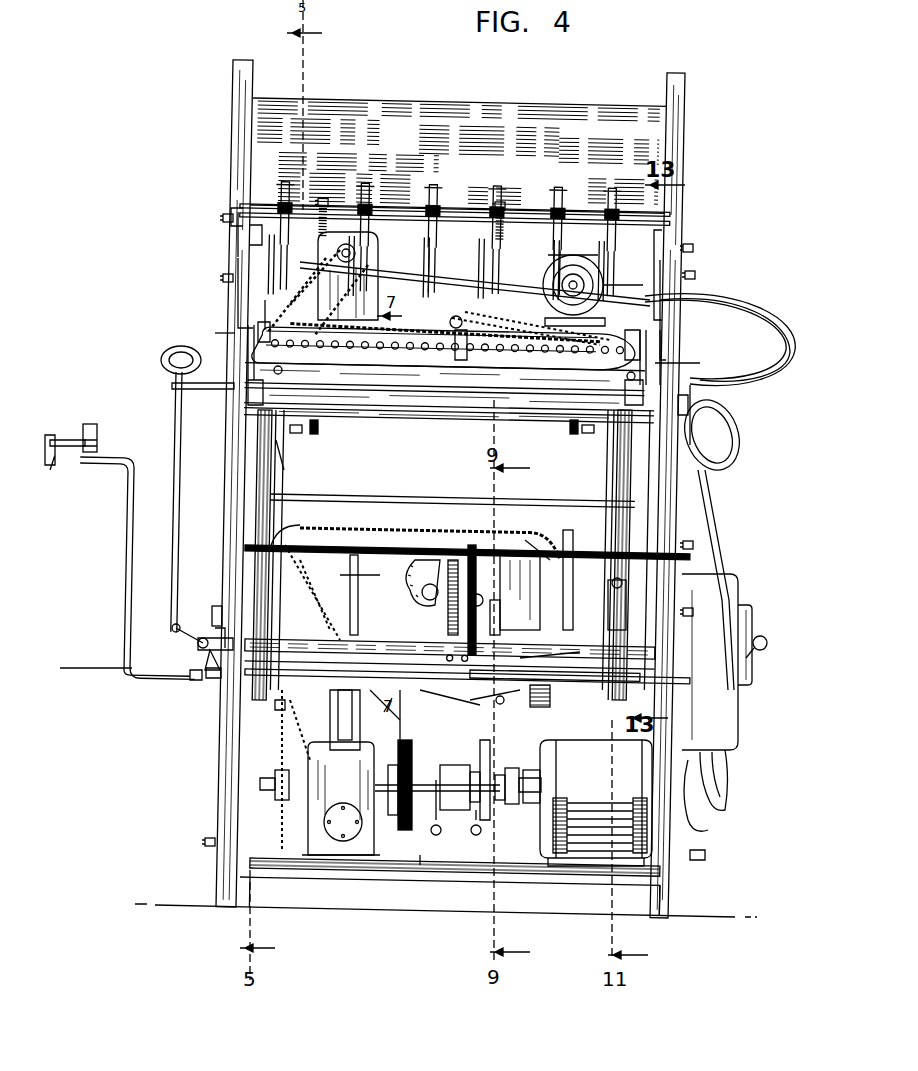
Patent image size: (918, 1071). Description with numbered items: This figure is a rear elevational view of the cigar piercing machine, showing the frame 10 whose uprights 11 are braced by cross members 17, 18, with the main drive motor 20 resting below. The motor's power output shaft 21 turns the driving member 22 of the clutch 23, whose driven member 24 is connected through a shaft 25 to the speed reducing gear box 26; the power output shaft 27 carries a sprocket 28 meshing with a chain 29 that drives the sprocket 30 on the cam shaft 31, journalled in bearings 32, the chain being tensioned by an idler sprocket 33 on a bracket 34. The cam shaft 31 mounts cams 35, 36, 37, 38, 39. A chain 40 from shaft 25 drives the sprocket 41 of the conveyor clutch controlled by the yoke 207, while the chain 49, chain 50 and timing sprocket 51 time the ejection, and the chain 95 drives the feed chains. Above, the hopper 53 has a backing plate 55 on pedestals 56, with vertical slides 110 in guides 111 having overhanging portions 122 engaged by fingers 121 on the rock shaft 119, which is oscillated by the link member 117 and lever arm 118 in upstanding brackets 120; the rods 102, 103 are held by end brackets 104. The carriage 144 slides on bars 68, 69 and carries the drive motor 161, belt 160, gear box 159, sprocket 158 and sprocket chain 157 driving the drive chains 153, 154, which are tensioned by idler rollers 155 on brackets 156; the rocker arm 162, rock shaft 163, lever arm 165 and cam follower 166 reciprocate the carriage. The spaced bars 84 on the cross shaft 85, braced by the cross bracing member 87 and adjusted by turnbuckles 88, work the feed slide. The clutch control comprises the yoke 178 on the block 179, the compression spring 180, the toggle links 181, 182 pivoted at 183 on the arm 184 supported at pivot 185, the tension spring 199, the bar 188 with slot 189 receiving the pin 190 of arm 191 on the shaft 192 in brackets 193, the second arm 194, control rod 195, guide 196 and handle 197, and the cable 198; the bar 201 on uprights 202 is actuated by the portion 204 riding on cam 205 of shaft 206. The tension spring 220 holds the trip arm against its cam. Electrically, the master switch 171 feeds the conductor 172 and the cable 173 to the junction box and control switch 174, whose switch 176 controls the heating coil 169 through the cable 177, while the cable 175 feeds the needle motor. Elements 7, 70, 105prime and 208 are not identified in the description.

The hopper 53 is at (685, 124).
The backing plate 55 is at (573, 110).
The uprights 11 is at (225, 880).
The rock shaft 119 is at (636, 225).
The overhanging portions 122 is at (280, 184).
The fingers 121 is at (278, 191).
The vertical slides 110 is at (291, 188).
The guides 111 is at (280, 251).
The lever arm 118 is at (241, 227).
The link member 117 is at (246, 250).
The upstanding brackets 120 is at (234, 281).
The end brackets 104 is at (678, 259).
The rod 102 is at (688, 273).
The rod 103 is at (696, 305).
The sprocket 158 is at (345, 232).
The speed reducing gear box 159 is at (385, 249).
The sprocket chain 157 is at (290, 310).
The belt 160 is at (402, 268).
The drive motor 161 is at (575, 258).
The drive chain 153 is at (485, 312).
The drive chain 154 is at (505, 312).
The roller chain conveyor 7 is at (444, 347).
The idler rollers 155 is at (443, 348).
The brackets 156 is at (460, 338).
The bar 68 is at (283, 375).
The bearing block 70 is at (283, 397).
The bar 69 is at (628, 382).
The pedestals 56 is at (238, 332).
The carriage 144 is at (640, 333).
The heating coil 169 is at (700, 367).
The cable 175 is at (773, 345).
The switch 176 is at (686, 408).
The junction box and control switch 174 is at (684, 414).
The cable 177 is at (726, 449).
The handle 197 is at (179, 344).
The guide 196 is at (196, 389).
The control rod 195 is at (176, 532).
The portion of the banding and wrapping machine 204 is at (122, 450).
The cam 205 is at (94, 423).
The shaft 206 is at (70, 437).
The cable 198 is at (80, 673).
The bar 201 is at (142, 687).
The shaft 192 is at (197, 641).
The second arm 194 is at (173, 624).
The brackets 193 is at (212, 628).
The arm 191 is at (198, 657).
The bar 188 is at (185, 680).
The pin 190 is at (210, 680).
The slot 189 is at (195, 693).
The side column 105prime is at (258, 492).
The spaced bars 84 is at (285, 470).
The turnbuckles 88 is at (316, 430).
The chain 95 is at (282, 460).
The cross bracing member 87 is at (413, 492).
The rocker arm 162 is at (652, 483).
The frame 10 is at (682, 505).
The chain 49 is at (294, 532).
The chain 50 is at (432, 536).
The timing sprocket 51 is at (525, 530).
The cross member 18 is at (646, 655).
The lever arm 165 is at (572, 540).
The rock shaft 163 is at (698, 545).
The bearings 32 is at (215, 604).
The sprocket 30 is at (290, 557).
The cam shaft 31 is at (308, 612).
The cam 36 is at (352, 597).
The cam 37 is at (445, 614).
The tension spring 220 is at (449, 578).
The tension spring 199 is at (478, 574).
The cam 38 is at (548, 589).
The cam 39 is at (612, 581).
The cam 35 is at (450, 654).
The cam follower 166 is at (550, 631).
The pivot 185 is at (545, 669).
The idler sprocket 33 is at (280, 704).
The bracket 34 is at (308, 715).
The uprights 202 is at (347, 715).
The chain 29 is at (280, 735).
The sprocket 28 is at (275, 776).
The power output shaft 27 is at (263, 790).
The speed reducing gear box 26 is at (341, 798).
The shaft 25 is at (382, 790).
The sprocket 41 is at (395, 785).
The driven member 24 is at (455, 778).
The yoke 207 is at (480, 745).
The clutch 23 is at (462, 812).
The driving member 22 is at (503, 800).
The coupling half 208 is at (510, 803).
The power output shaft 21 is at (514, 782).
The main drive motor 20 is at (640, 825).
The chain 40 is at (405, 847).
The block 179 is at (440, 863).
The cross member 17 is at (633, 884).
The cross shaft 85 is at (205, 852).
The master switch 171 is at (738, 591).
The cable 173 is at (730, 790).
The conductor 172 is at (705, 840).
The link 181 is at (382, 706).
The compression spring 180 is at (407, 698).
The yoke 178 is at (460, 706).
The link 182 is at (498, 708).
The pivot 183 is at (506, 703).
The arm 184 is at (537, 708).